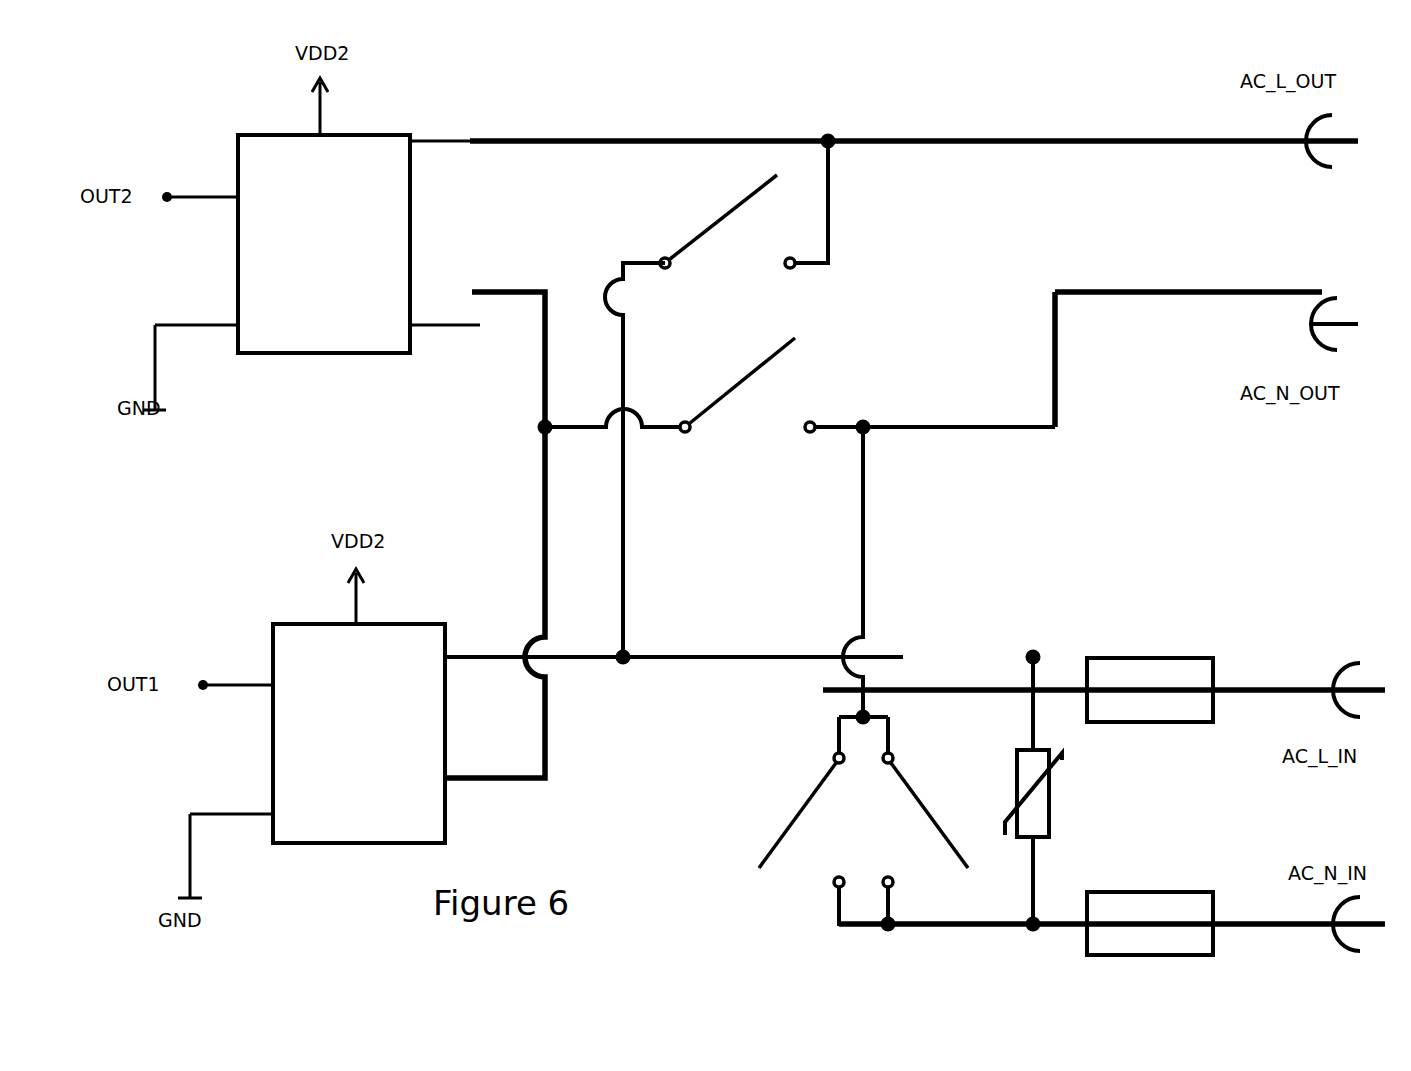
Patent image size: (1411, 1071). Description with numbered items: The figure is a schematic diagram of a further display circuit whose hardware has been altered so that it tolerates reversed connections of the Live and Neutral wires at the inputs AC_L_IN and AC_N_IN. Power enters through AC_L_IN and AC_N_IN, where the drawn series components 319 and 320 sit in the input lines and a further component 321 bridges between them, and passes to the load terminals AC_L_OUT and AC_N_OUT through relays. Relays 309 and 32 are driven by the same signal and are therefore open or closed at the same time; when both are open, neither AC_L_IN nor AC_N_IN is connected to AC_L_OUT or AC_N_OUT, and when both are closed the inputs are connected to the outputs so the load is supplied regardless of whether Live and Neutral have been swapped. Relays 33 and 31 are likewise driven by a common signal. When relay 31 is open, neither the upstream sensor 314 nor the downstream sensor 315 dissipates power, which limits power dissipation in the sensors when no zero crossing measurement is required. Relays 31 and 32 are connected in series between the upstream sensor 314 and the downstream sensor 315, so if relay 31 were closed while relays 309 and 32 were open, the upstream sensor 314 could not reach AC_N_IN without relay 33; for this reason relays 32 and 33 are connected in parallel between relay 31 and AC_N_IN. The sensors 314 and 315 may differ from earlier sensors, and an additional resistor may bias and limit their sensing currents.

The downstream sensor 315 is at (353, 210).
The upstream sensor 314 is at (337, 710).
The relay 309 is at (711, 221).
The relay 31 is at (747, 385).
The relay 32 is at (790, 820).
The relay 33 is at (925, 815).
The fuse 319 is at (1150, 646).
The fuse 320 is at (1150, 904).
The varistor 321 is at (1069, 793).